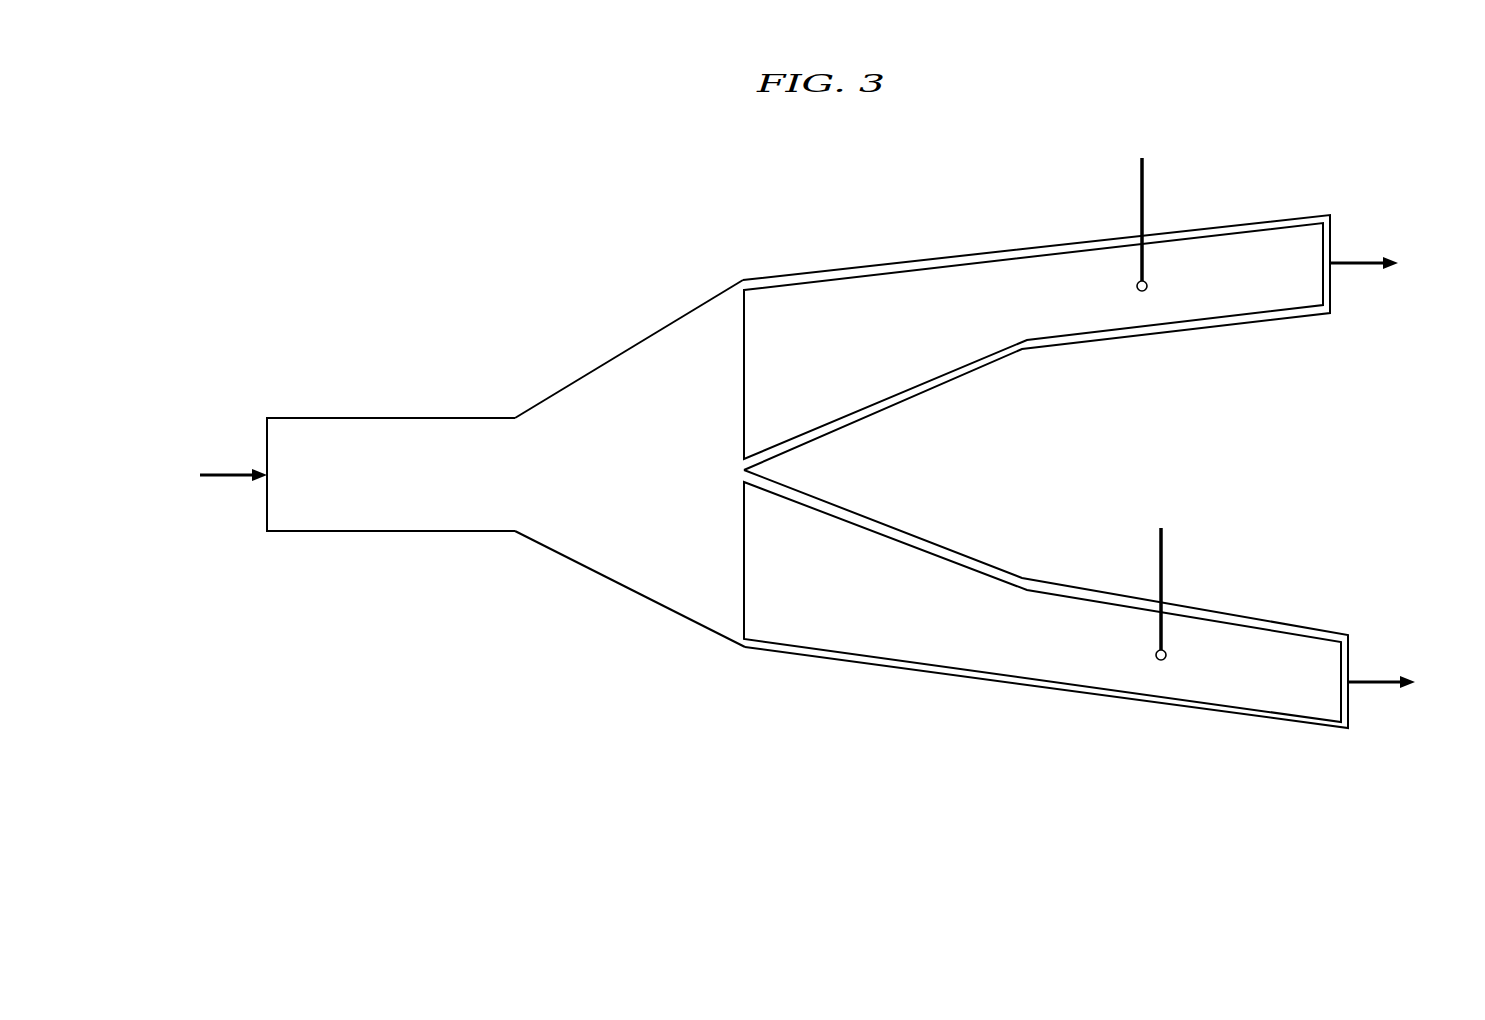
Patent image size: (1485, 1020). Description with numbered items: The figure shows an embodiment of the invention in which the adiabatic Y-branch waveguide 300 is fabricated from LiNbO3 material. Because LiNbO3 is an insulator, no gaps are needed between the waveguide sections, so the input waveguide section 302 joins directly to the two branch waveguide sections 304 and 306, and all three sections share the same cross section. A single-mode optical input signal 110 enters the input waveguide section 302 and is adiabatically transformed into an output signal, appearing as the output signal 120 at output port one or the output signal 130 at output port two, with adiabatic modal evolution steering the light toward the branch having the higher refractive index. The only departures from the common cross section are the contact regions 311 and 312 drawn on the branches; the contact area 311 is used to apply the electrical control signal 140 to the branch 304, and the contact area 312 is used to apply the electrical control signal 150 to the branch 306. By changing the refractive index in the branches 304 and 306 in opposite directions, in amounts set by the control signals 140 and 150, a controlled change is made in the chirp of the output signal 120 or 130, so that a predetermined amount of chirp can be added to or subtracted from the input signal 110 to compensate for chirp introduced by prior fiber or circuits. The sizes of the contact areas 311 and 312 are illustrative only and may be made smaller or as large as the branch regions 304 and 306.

The Y-branch waveguide 300 is at (807, 467).
The waveguide section 302 is at (393, 513).
The waveguide section 304 is at (727, 389).
The waveguide section 306 is at (768, 572).
The contact region 311 is at (888, 318).
The contact region 312 is at (903, 602).
The electrical control signal 140 is at (1142, 170).
The electrical control signal 150 is at (1161, 540).
The optical input signal 110 is at (215, 477).
The output signal 120 is at (1396, 265).
The output signal 130 is at (1413, 684).